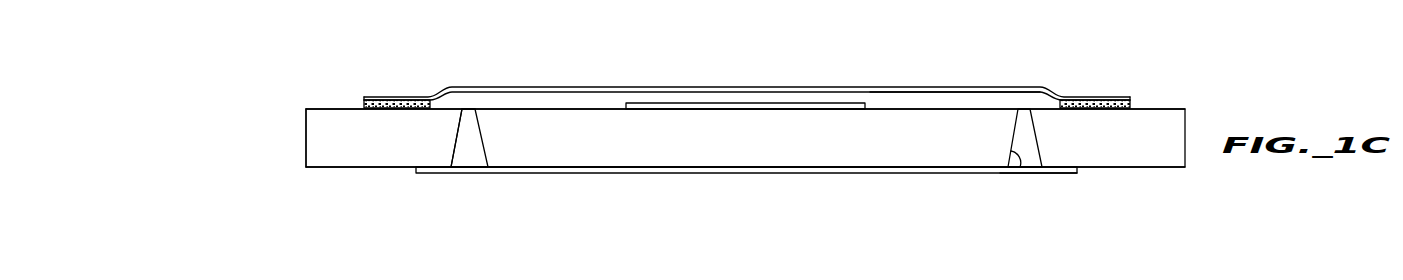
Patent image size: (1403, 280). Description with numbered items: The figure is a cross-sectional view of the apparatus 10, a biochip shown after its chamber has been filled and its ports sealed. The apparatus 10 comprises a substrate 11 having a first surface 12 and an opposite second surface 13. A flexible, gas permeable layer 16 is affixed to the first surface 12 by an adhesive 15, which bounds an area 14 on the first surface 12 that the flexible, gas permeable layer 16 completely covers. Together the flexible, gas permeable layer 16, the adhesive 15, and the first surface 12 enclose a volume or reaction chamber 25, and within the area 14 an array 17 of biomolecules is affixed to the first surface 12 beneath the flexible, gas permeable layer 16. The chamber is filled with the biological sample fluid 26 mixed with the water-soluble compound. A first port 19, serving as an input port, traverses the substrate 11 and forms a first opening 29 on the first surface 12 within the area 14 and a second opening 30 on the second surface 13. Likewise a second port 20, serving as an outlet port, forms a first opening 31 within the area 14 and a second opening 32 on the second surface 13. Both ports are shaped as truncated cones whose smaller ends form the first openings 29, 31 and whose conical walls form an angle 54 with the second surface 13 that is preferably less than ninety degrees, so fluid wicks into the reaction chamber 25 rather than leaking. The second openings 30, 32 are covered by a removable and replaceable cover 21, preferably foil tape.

The apparatus 10 is at (281, 124).
The substrate 11 is at (323, 168).
The first surface 12 is at (332, 108).
The second surface 13 is at (363, 173).
The area 14 is at (574, 118).
The adhesive 15 is at (396, 109).
The flexible, gas permeable layer 16 is at (1001, 86).
The array of biomolecules 17 is at (756, 116).
The first port 19 is at (470, 138).
The second port 20 is at (1029, 146).
The replaceable cover 21 is at (633, 174).
The volume or reaction chamber 25 is at (950, 98).
The biological sample fluid 26 is at (897, 98).
The first opening of first port 29 is at (468, 108).
The second opening of first port 30 is at (473, 174).
The first opening of second port 31 is at (1018, 108).
The second opening of second port 32 is at (1031, 180).
The angle 54 is at (1011, 165).